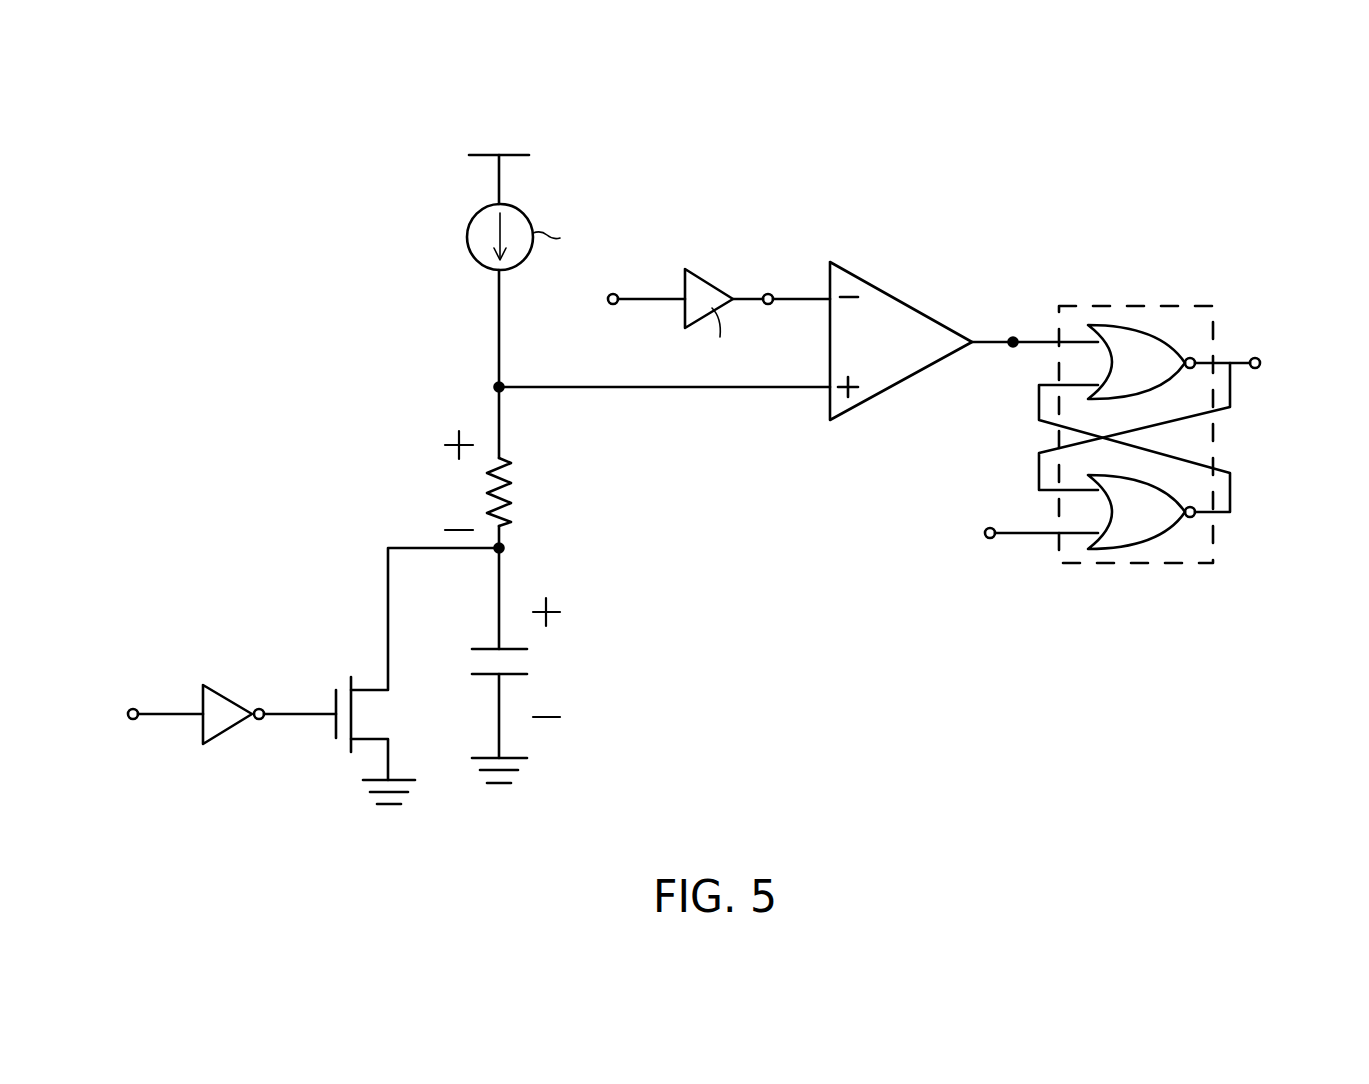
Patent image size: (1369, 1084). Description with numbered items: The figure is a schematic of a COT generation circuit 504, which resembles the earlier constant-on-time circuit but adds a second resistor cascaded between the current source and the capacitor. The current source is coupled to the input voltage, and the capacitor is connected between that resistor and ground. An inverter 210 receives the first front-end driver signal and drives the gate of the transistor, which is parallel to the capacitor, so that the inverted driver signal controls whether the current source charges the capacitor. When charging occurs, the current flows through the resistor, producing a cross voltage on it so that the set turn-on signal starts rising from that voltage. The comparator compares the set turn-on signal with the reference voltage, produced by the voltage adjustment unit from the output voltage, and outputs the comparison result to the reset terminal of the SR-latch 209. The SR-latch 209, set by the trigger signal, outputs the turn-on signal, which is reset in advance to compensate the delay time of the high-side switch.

The COT generation circuit 504 is at (700, 446).
The SR-latch 209 is at (1133, 306).
The inverter 210 is at (232, 727).